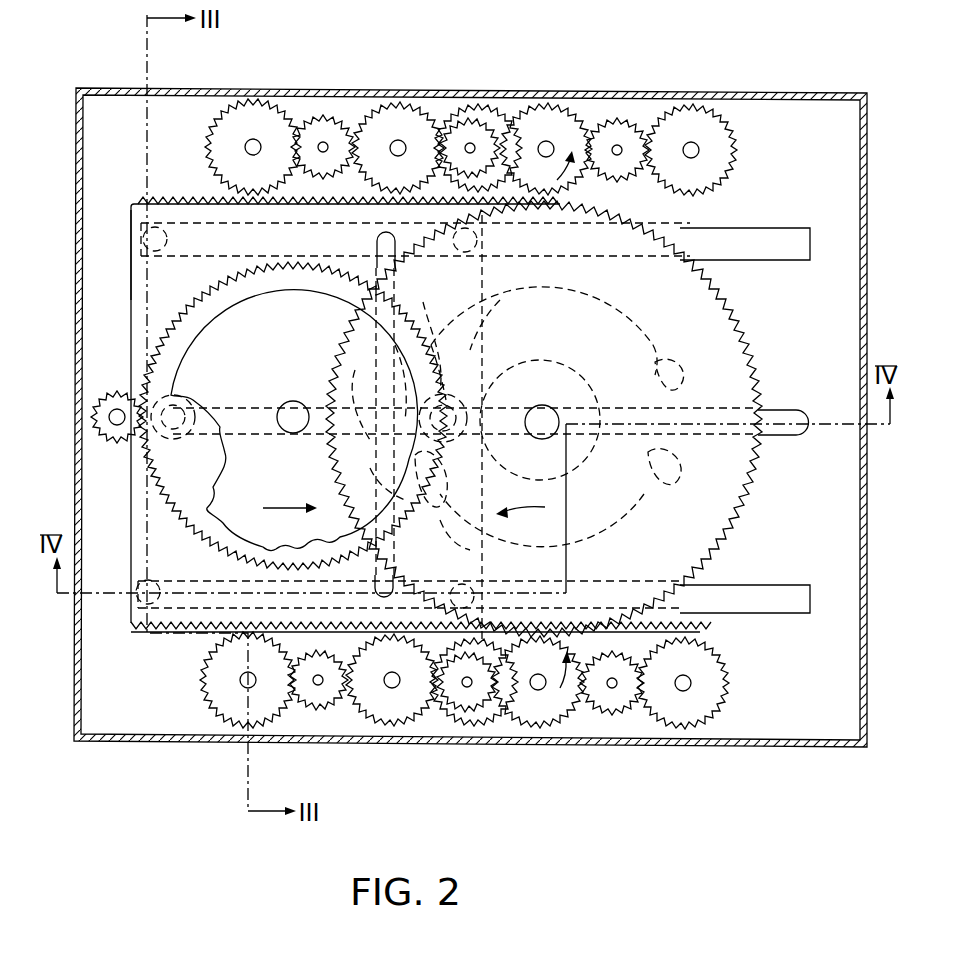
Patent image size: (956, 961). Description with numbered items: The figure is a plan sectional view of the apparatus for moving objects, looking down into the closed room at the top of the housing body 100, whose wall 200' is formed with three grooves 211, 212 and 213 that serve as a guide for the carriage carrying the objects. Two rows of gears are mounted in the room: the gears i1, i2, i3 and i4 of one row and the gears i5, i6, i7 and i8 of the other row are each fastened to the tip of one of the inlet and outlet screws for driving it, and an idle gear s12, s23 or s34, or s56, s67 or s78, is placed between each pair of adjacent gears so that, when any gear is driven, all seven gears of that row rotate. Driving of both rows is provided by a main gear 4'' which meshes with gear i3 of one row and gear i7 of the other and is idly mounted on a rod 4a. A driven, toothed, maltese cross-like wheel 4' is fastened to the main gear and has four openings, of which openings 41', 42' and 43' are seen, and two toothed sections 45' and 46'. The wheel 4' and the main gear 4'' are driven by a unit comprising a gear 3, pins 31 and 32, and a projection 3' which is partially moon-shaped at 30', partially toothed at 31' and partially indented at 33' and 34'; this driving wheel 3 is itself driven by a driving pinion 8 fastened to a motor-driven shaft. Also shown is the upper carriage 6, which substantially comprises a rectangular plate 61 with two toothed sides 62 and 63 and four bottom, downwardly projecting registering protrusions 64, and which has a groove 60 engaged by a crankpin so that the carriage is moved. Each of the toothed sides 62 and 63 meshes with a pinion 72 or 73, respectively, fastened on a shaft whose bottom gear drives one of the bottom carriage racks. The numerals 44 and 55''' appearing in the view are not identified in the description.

The housing body 100 is at (739, 84).
The gear i1 is at (243, 122).
The idle gear s12 is at (323, 128).
The gear i2 is at (393, 120).
The pinion 72 is at (453, 113).
The idle gear s23 is at (475, 132).
The gear i3 is at (547, 128).
The idle gear s34 is at (618, 132).
The gear i4 is at (690, 133).
The gear i5 is at (233, 707).
The idle gear s56 is at (320, 703).
The gear i6 is at (392, 710).
The pinion 73 is at (487, 708).
The idle gear s67 is at (460, 698).
The gear i7 is at (543, 708).
The idle gear s78 is at (612, 698).
The gear i8 is at (688, 712).
The driving pinion 8 is at (110, 393).
The upper carriage 6 is at (174, 192).
The rectangular plate 61 is at (131, 306).
The toothed side 62 is at (133, 200).
The toothed side 63 is at (131, 629).
The registering protrusions 64 is at (143, 243).
The groove 60 is at (377, 246).
The main gear 4'' is at (552, 419).
The rod 4a is at (540, 422).
The groove 211 is at (797, 438).
The groove 212 is at (788, 242).
The groove 213 is at (780, 602).
The body housing wall 200' is at (779, 650).
The toothed section 45' is at (542, 306).
The maltese cross-like wheel 4' is at (545, 351).
The opening 42' is at (683, 355).
The opening 43' is at (678, 481).
The toothed section 46' is at (542, 533).
The opening 41' is at (461, 333).
The pin 32 is at (442, 500).
The pivot 44 is at (436, 476).
The lever 55''' is at (372, 390).
The indented portion 34' is at (347, 473).
The gear 3 is at (293, 416).
The moon-shaped portion 30' is at (244, 385).
The projection 3' is at (284, 420).
The indented portion 33' is at (195, 465).
The pin 31 is at (160, 526).
The toothed portion 31' is at (200, 551).